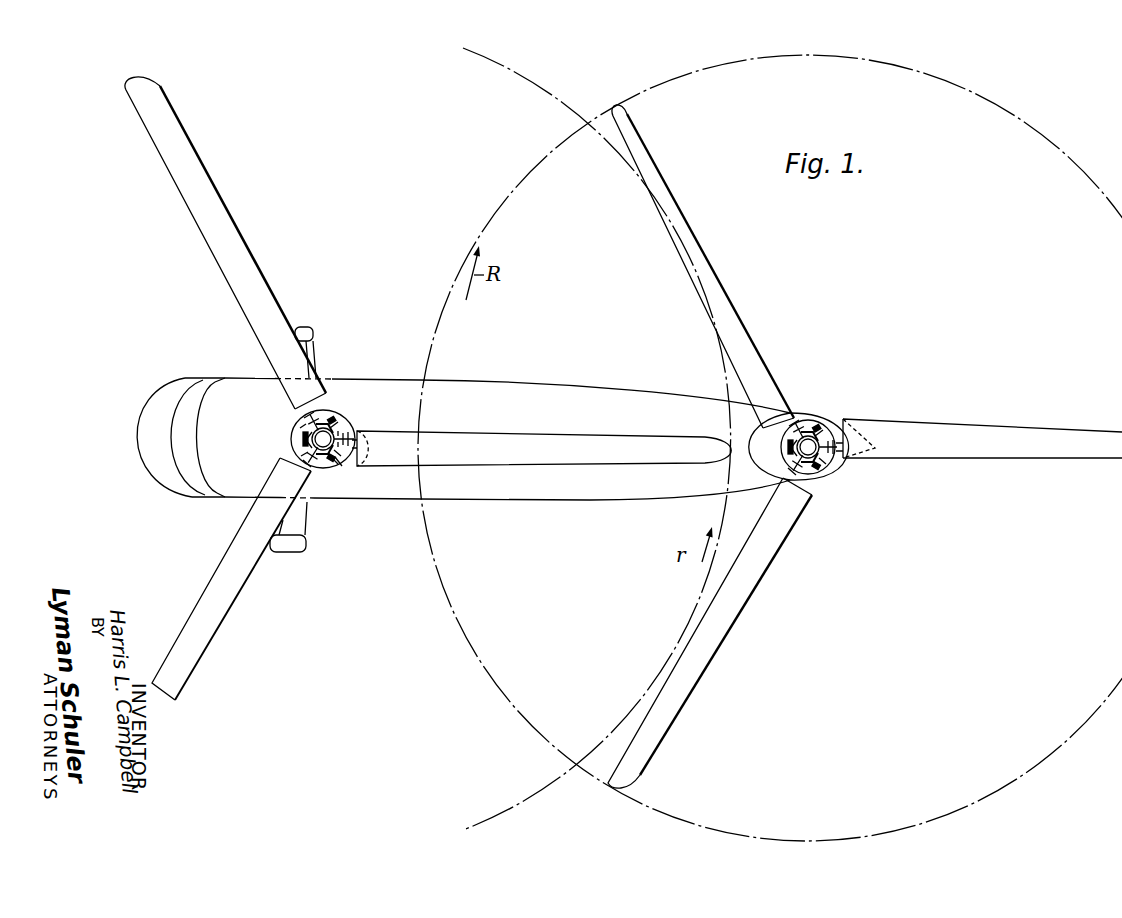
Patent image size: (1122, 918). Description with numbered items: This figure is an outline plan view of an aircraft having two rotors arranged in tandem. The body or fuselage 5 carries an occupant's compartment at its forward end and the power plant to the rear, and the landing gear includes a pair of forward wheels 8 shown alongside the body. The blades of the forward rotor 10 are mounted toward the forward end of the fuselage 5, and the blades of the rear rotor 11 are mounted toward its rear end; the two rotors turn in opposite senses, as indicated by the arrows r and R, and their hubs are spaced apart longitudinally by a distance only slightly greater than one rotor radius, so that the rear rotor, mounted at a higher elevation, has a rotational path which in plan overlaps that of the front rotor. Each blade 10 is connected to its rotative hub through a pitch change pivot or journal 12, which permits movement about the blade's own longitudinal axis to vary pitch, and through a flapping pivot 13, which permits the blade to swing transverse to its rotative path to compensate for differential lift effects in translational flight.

The body or fuselage 5 is at (473, 382).
The forward wheels 8 is at (311, 333).
The blades of the forward rotor 10 is at (232, 215).
The blades of the rear rotor 11 is at (762, 330).
The pitch change pivot or journal 12 is at (352, 427).
The flapping pivot 13 is at (338, 468).